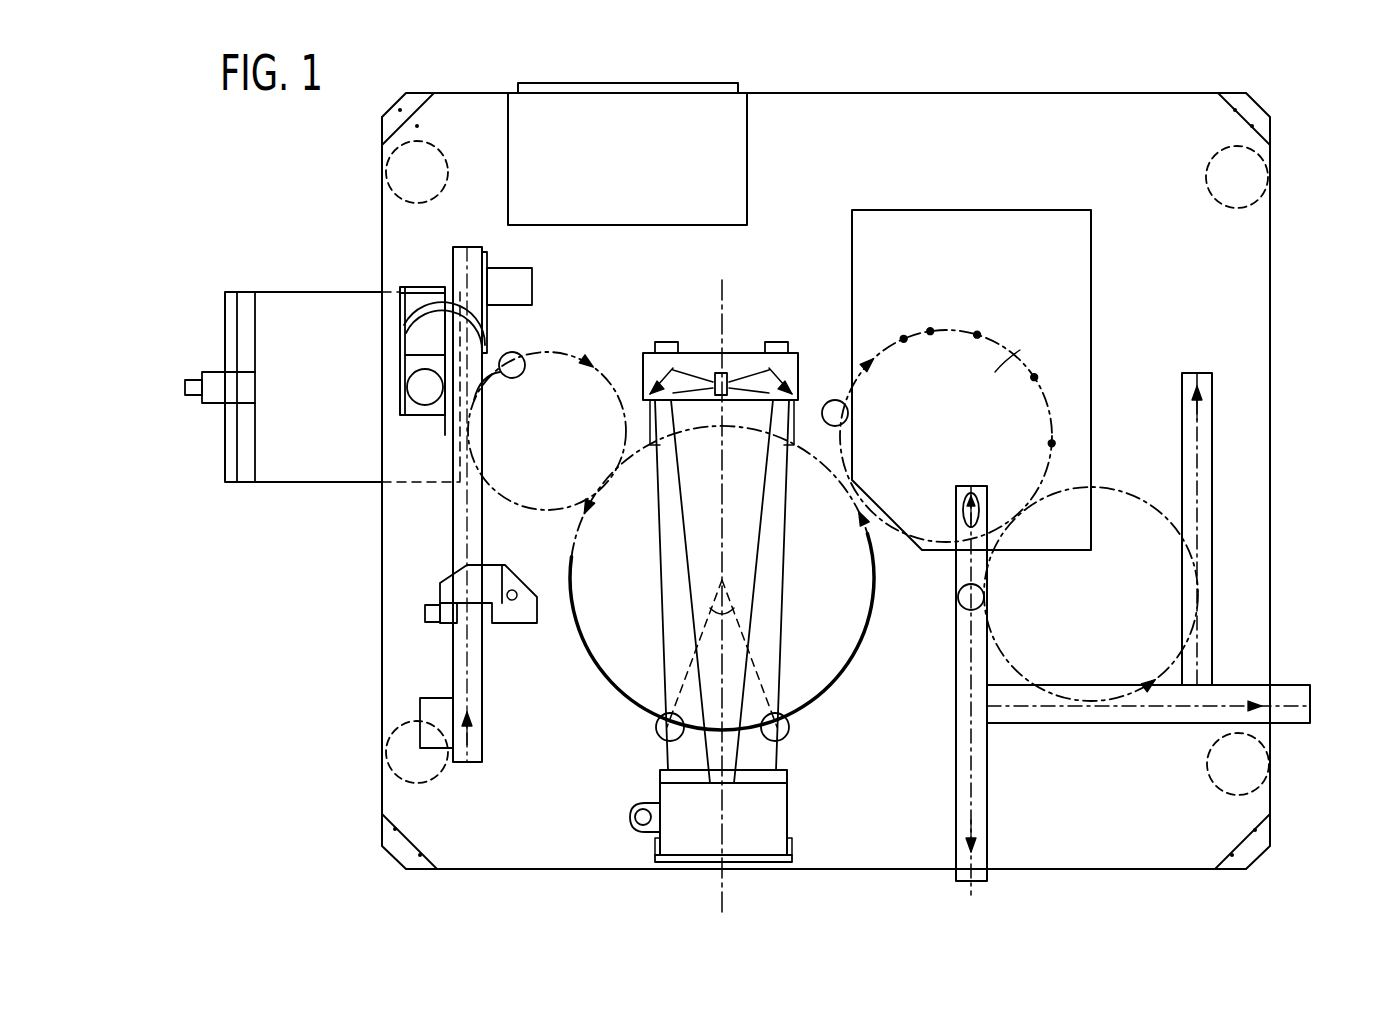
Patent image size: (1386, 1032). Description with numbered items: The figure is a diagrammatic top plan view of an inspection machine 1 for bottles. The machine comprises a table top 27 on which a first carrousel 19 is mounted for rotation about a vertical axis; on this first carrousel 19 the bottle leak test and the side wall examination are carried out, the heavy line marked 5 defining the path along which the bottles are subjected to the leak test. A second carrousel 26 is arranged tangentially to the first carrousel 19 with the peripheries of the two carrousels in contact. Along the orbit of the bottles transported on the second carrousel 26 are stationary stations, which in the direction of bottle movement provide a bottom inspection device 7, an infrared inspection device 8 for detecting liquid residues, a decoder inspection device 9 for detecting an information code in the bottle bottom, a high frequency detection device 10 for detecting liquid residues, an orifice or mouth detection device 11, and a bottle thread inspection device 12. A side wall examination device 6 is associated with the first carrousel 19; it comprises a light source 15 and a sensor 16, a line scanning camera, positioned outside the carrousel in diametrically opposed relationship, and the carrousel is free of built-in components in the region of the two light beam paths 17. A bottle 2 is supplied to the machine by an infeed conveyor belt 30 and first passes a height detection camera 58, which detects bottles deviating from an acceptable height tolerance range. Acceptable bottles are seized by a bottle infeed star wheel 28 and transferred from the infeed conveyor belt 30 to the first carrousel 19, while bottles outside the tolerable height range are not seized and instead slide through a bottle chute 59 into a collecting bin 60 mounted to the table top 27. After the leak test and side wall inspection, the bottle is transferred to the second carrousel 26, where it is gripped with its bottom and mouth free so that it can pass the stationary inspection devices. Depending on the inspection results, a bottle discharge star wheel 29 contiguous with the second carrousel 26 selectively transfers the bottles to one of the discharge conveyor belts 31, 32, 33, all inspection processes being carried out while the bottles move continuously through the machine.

The inspection machine 1 is at (897, 80).
The bottle 2 is at (755, 280).
The leak test path 5 is at (566, 562).
The side wall examination device 6 is at (728, 336).
The bottom inspection device 7 is at (903, 336).
The infrared inspection device 8 is at (930, 330).
The decoder inspection device 9 is at (977, 333).
The high frequency detection device 10 is at (995, 372).
The orifice or mouth detection device 11 is at (1034, 377).
The bottle thread inspection device 12 is at (1051, 442).
The light source 15 is at (685, 802).
The sensor 16 is at (716, 372).
The light beam paths 17 is at (680, 632).
The first carrousel 19 is at (586, 683).
The second carrousel 26 is at (845, 400).
The table top 27 is at (1240, 248).
The bottle infeed star wheel 28 is at (591, 368).
The bottle discharge star wheel 29 is at (1135, 492).
The infeed conveyor belt 30 is at (458, 682).
The discharge conveyor belt 31 is at (978, 803).
The discharge conveyor belt 32 is at (1300, 696).
The discharge conveyor belt 33 is at (1188, 352).
The height detection camera 58 is at (445, 610).
The bottle chute 59 is at (424, 388).
The collecting bin 60 is at (272, 350).